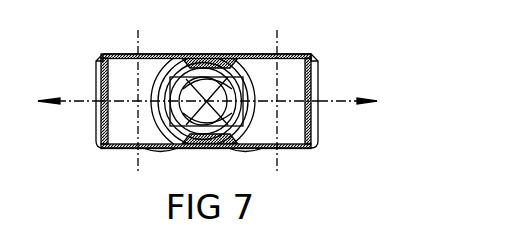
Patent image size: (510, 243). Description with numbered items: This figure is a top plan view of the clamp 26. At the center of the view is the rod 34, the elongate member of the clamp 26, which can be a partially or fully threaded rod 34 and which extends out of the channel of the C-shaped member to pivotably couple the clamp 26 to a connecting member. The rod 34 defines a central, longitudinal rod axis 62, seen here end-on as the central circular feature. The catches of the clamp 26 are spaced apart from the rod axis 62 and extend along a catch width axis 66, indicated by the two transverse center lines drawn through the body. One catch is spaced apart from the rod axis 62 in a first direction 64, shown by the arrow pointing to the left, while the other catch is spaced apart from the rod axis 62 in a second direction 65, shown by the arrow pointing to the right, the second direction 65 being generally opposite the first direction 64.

The clamp 26 is at (87, 143).
The rod 34 is at (233, 60).
The rod axis 62 is at (193, 62).
The catch width axis 66 is at (138, 44).
The first direction 64 is at (73, 101).
The second direction 65 is at (335, 101).